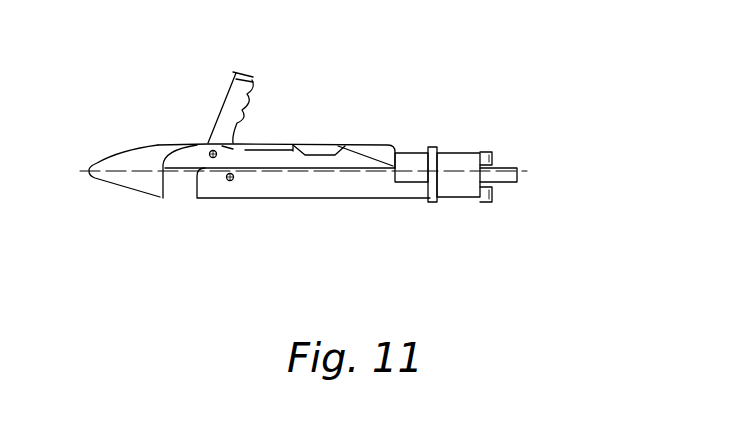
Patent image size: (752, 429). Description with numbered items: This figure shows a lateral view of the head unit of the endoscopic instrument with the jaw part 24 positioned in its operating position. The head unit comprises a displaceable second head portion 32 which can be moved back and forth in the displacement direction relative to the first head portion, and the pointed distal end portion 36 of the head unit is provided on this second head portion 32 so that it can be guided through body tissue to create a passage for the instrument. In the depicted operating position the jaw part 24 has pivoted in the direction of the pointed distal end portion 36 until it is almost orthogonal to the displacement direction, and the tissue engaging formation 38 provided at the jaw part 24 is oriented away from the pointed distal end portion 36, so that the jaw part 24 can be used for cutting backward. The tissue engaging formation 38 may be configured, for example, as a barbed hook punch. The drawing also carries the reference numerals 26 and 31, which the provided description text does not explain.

The jaw part 24 is at (236, 73).
The cable 26 is at (515, 167).
The housing 31 is at (333, 202).
The second head portion 32 is at (352, 147).
The distal end portion 36 is at (87, 196).
The tissue engaging formation 38 is at (256, 94).